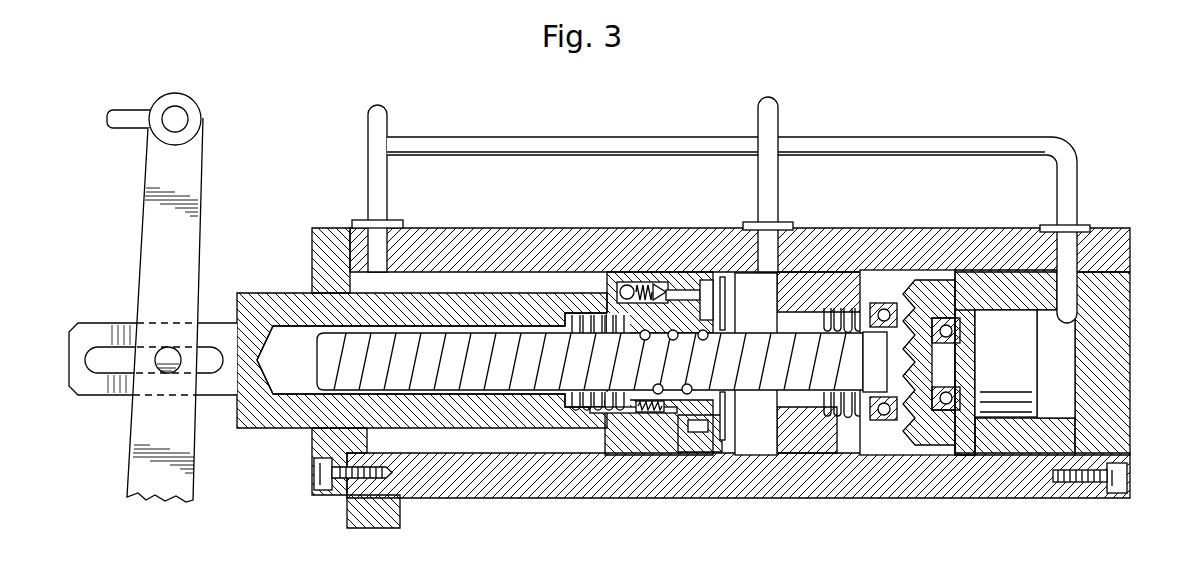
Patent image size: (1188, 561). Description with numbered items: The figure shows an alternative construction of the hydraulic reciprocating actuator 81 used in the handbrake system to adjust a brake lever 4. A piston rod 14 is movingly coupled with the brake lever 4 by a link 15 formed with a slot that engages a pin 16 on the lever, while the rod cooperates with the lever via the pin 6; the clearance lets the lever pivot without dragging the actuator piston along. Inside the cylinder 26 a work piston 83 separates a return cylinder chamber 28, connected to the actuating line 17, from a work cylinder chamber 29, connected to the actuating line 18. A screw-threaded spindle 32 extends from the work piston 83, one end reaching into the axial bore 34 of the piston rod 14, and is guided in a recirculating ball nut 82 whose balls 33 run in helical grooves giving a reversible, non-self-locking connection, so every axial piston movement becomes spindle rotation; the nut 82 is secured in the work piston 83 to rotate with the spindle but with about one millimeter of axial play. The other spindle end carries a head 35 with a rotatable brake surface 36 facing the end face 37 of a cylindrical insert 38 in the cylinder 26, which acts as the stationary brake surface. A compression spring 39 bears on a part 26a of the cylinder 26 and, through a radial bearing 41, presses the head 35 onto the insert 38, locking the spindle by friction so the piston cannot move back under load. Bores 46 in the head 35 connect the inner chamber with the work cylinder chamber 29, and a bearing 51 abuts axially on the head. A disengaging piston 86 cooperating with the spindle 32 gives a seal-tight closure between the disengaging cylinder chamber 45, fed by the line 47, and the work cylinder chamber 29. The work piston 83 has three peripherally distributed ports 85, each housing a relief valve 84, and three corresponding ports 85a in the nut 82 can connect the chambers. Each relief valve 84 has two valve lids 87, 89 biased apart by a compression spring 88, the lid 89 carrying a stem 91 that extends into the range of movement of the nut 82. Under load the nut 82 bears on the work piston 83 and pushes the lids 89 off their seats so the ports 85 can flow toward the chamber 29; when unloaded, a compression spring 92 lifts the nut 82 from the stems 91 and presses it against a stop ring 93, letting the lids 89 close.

The brake lever 4 is at (137, 462).
The pin 6 is at (122, 117).
The piston rod 14 is at (250, 420).
The link 15 is at (95, 332).
The pin 16 is at (168, 355).
The actuating line 17 is at (382, 122).
The actuating line 18 is at (772, 118).
The cylinder 26 is at (515, 477).
The part of the cylinder 26a is at (805, 272).
The return cylinder chamber 28 is at (408, 445).
The work cylinder chamber 29 is at (760, 447).
The screw-threaded spindle 32 is at (335, 347).
The balls 33 is at (725, 316).
The bore 34 is at (292, 387).
The head 35 is at (927, 435).
The rotatable brake surface 36 is at (962, 290).
The end face 37 is at (953, 447).
The cylindrical insert 38 is at (1017, 437).
The compression spring 39 is at (840, 423).
The radial bearing 41 is at (877, 422).
The disengaging cylinder chamber 45 is at (1067, 343).
The bores 46 is at (918, 328).
The line 47 is at (1072, 168).
The bearing 51 is at (945, 418).
The reciprocating actuator 81 is at (1131, 207).
The recirculating ball nut 82 is at (705, 438).
The work piston 83 is at (627, 437).
The relief valve 84 is at (644, 283).
The port 85 is at (635, 283).
The port 85a is at (692, 427).
The disengaging piston 86 is at (1006, 363).
The valve lid 87 is at (618, 282).
The compression spring 88 is at (658, 286).
The valve lid 89 is at (683, 290).
The stem 91 is at (710, 283).
The compression spring 92 is at (580, 403).
The stop ring 93 is at (725, 412).